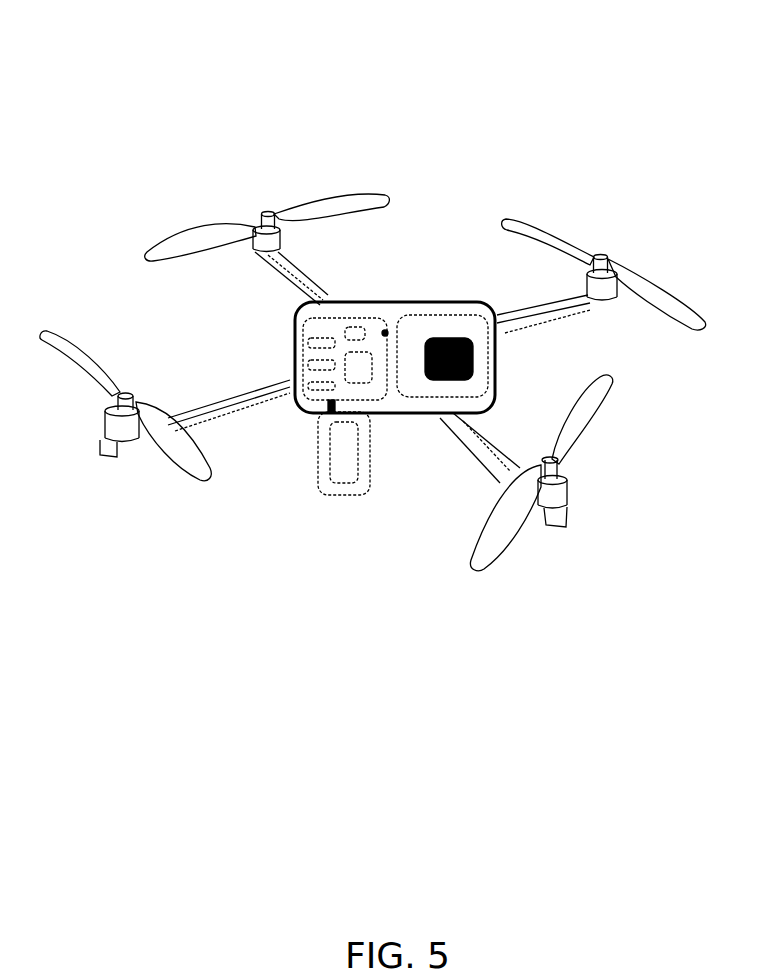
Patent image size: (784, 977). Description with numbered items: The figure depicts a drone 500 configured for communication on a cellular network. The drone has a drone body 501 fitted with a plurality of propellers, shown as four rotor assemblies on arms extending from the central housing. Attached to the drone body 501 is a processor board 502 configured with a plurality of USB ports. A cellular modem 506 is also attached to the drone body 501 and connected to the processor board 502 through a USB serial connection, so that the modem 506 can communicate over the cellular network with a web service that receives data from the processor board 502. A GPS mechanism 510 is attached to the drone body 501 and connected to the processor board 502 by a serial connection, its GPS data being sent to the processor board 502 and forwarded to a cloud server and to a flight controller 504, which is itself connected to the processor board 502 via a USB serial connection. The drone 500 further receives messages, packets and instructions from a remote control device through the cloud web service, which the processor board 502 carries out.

The drone 500 is at (413, 35).
The drone body 501 is at (480, 312).
The processor board 502 is at (336, 327).
The flight controller 504 is at (432, 388).
The cellular modem 506 is at (347, 497).
The GPS mechanism 510 is at (502, 369).